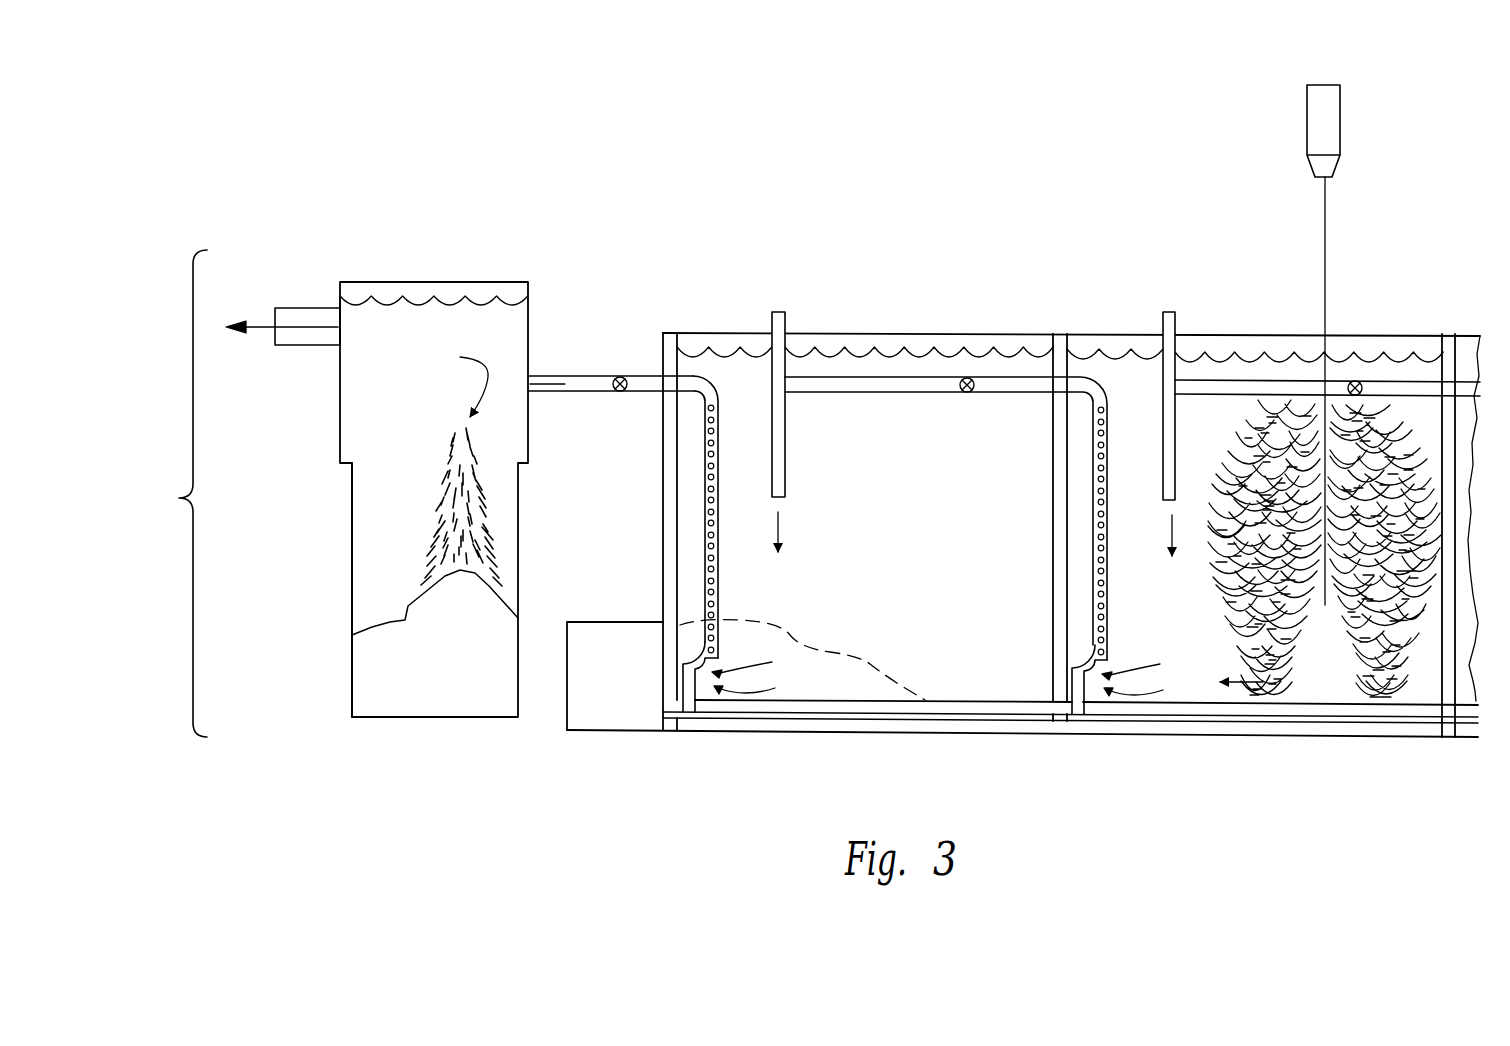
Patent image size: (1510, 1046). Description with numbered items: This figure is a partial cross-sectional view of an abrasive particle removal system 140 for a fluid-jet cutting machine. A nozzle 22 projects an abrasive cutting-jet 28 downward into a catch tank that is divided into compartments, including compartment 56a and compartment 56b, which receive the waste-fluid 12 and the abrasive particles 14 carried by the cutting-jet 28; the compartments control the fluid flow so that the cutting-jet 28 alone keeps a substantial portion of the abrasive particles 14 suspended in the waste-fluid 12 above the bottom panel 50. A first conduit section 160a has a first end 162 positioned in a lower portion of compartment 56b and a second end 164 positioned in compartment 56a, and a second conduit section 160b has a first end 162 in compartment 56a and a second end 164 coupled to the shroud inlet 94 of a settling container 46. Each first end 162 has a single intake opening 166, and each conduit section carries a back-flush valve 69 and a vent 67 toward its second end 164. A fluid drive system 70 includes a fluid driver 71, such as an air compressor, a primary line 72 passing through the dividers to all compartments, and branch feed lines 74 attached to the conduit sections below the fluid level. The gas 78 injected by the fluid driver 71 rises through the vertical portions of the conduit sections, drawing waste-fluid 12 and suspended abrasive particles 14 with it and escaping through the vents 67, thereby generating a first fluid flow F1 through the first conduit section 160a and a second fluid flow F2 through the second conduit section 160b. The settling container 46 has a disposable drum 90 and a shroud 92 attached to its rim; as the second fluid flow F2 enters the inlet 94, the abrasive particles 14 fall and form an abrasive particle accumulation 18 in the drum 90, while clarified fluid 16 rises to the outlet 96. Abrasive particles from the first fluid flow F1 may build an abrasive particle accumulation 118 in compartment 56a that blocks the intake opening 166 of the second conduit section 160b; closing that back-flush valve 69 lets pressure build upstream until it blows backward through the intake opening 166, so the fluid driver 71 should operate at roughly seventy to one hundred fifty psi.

The abrasive particle removal system 140 is at (175, 493).
The settling container 46 is at (460, 469).
The shroud 92 is at (422, 280).
The disposable drum 90 is at (352, 612).
The shroud outlet 96 is at (345, 315).
The clarified fluid 16 is at (264, 326).
The shroud inlet 94 is at (530, 378).
The abrasive particle accumulation 18 is at (387, 623).
The abrasive particles 14 is at (428, 518).
The bottom panel 50 is at (955, 733).
The primary line 72 is at (872, 715).
The fluid driver 71 is at (594, 622).
The fluid drive system 70 is at (558, 730).
The waste-fluid 12 is at (748, 355).
The vent 67 is at (788, 320).
The compartment 56a is at (861, 359).
The compartment 56b is at (1251, 362).
The second conduit section 160b is at (638, 375).
The first conduit section 160a is at (865, 393).
The gas 78 is at (705, 527).
The back-flush valve 69 is at (615, 378).
The second end 164 is at (542, 388).
The first end 162 is at (718, 627).
The abrasive particle accumulation 118 is at (810, 649).
The intake opening 166 is at (735, 667).
The branch feed lines 74 is at (702, 687).
The first fluid flow F1 is at (778, 512).
The second fluid flow F2 is at (460, 380).
The nozzle 22 is at (1340, 110).
The abrasive cutting-jet 28 is at (1326, 240).